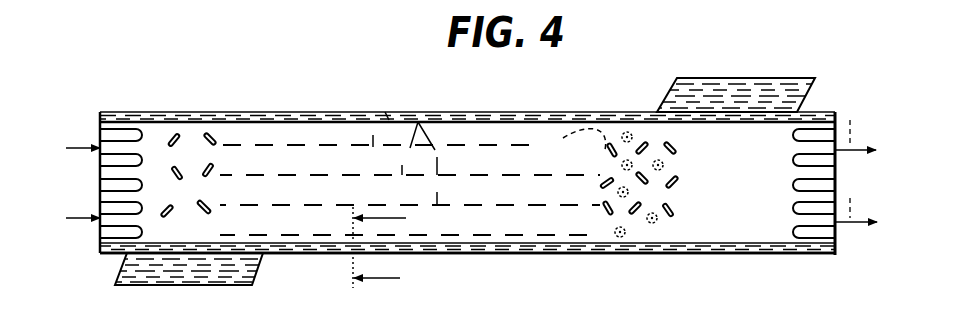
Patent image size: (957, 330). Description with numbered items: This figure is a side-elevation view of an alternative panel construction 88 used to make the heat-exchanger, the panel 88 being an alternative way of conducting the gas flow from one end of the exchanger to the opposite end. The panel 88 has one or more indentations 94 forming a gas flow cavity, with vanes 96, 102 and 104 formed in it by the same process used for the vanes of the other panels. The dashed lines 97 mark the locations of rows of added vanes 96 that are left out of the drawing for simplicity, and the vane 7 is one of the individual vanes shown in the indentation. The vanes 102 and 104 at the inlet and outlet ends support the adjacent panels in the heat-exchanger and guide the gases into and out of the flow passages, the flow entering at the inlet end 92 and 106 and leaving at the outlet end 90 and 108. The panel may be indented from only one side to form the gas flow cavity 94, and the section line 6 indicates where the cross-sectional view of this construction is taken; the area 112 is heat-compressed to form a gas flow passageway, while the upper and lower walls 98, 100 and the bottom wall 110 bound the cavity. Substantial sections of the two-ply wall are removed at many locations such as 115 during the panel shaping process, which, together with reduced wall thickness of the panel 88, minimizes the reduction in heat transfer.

The section line 6 is at (388, 250).
The fiber 7 is at (165, 243).
The panel 88 is at (582, 263).
The outlet end wall 90 is at (840, 248).
The inlet end wall 92 is at (102, 249).
The indentation 94 is at (757, 228).
The vanes 96 is at (203, 122).
The dashed lines 97 is at (432, 100).
The upper block 98 is at (668, 92).
The lower block 100 is at (256, 268).
The vane 102 is at (111, 187).
The vane 104 is at (838, 133).
The inlet flow 106 is at (88, 147).
The outlet flow 108 is at (857, 171).
The bottom wall 110 is at (465, 258).
The area 112 is at (346, 236).
The removed sections 115 is at (569, 137).